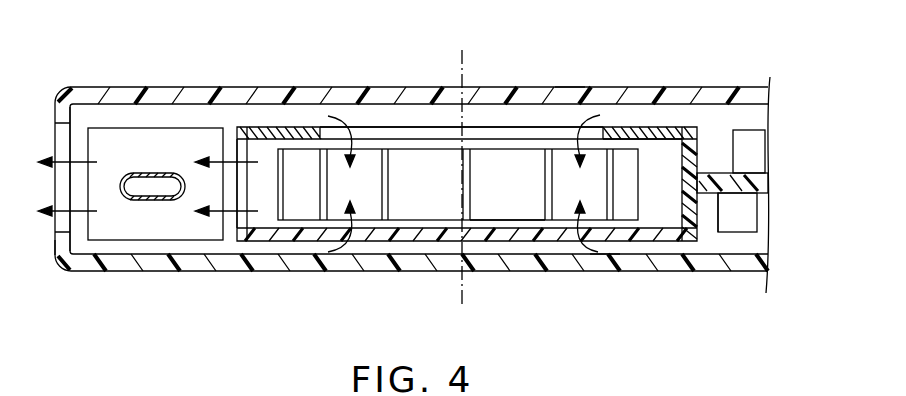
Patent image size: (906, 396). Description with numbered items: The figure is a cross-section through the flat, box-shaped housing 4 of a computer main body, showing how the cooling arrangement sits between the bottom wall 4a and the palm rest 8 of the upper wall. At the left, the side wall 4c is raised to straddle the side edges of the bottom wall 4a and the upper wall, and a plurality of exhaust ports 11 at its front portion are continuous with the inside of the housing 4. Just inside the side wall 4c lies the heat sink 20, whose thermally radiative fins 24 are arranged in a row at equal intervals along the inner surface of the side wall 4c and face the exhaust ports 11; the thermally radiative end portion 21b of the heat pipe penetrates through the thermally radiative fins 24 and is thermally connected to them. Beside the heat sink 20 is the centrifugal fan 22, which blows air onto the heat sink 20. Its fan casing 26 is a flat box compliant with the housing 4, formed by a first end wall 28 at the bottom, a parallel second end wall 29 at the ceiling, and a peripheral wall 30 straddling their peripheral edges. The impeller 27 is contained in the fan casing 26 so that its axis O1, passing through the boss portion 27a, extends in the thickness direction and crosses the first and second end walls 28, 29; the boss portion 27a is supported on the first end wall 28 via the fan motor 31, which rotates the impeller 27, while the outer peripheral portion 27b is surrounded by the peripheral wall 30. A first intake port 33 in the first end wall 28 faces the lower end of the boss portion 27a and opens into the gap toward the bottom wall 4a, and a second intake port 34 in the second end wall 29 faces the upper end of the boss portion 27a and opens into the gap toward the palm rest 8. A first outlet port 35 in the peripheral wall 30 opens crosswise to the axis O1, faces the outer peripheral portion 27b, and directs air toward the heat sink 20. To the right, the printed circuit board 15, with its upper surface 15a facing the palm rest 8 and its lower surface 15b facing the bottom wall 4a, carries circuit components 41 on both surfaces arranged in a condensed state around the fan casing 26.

The housing 4 is at (85, 87).
The bottom wall 4a is at (605, 268).
The side wall 4c is at (53, 230).
The palm rest 8 is at (570, 97).
The exhaust ports 11 is at (63, 142).
The printed circuit board 15 is at (747, 188).
The upper surface 15a is at (727, 173).
The lower surface 15b is at (727, 193).
The heat sink 20 is at (117, 240).
The thermally radiative end portion 21b is at (160, 190).
The centrifugal fan 22 is at (257, 128).
The thermally radiative fins 24 is at (152, 140).
The fan casing 26 is at (652, 127).
The impeller 27 is at (507, 158).
The boss portion 27a is at (517, 208).
The outer peripheral portion 27b is at (640, 200).
The first end wall 28 is at (490, 232).
The second end wall 29 is at (627, 137).
The peripheral wall 30 is at (687, 230).
The fan motor 31 is at (427, 223).
The first intake port 33 is at (358, 233).
The second intake port 34 is at (383, 135).
The first outlet port 35 is at (247, 198).
The circuit components 41 is at (753, 140).
The axis O1 is at (462, 50).